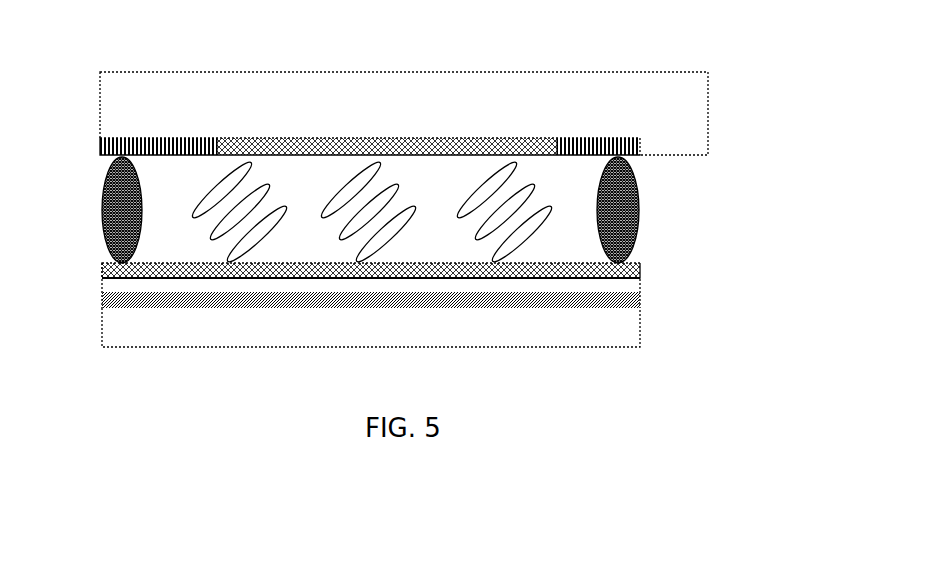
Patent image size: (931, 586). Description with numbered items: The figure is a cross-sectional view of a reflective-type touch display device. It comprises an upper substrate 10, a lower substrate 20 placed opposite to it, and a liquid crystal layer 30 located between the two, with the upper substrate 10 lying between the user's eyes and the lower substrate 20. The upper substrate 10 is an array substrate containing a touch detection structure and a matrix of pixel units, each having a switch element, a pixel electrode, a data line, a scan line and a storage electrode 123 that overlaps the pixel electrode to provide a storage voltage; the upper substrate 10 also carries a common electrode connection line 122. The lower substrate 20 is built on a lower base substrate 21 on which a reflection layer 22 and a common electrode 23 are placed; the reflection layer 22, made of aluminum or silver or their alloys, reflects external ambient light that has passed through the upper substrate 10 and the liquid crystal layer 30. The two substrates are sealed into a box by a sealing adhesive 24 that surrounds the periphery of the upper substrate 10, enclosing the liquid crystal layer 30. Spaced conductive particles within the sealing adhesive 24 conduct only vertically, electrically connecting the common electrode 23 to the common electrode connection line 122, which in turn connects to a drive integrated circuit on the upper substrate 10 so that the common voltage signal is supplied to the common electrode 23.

The upper substrate 10 is at (147, 102).
The common electrode connection line 122 is at (640, 140).
The storage electrode 123 is at (452, 138).
The liquid crystal layer 30 is at (98, 162).
The sealing adhesive 24 is at (641, 200).
The common electrode 23 is at (625, 265).
The reflection layer 22 is at (632, 288).
The lower base substrate 21 is at (612, 330).
The lower substrate 20 is at (98, 265).